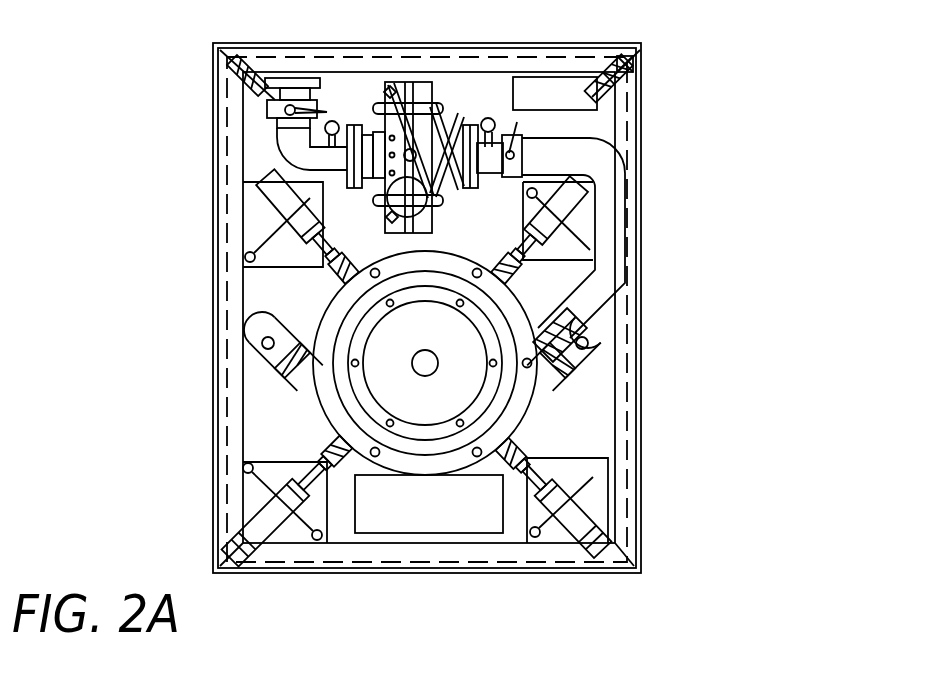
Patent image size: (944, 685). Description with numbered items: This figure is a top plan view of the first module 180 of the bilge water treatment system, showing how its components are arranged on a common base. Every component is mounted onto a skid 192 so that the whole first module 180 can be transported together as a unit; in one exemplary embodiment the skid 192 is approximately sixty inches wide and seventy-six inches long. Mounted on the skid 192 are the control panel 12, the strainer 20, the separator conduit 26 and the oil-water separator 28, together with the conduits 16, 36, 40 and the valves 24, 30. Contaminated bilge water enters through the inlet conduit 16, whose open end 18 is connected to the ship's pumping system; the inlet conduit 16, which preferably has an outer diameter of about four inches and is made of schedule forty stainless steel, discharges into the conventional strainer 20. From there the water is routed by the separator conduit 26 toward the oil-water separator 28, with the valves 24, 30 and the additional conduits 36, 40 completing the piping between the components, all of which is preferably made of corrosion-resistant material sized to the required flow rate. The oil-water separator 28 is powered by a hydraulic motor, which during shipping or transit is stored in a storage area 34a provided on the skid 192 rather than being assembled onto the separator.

The first module 180 is at (720, 286).
The control panel 12 is at (545, 85).
The skid 192 is at (625, 97).
The open end 18 is at (296, 80).
The valve 24 is at (263, 115).
The inlet conduit 16 is at (293, 143).
The strainer 20 is at (392, 85).
The valve 30 is at (522, 133).
The separator conduit 26 is at (608, 217).
The oil-water separator 28 is at (520, 408).
The conduit 36 is at (253, 340).
The conduit 40 is at (600, 347).
The storage area 34a is at (403, 513).